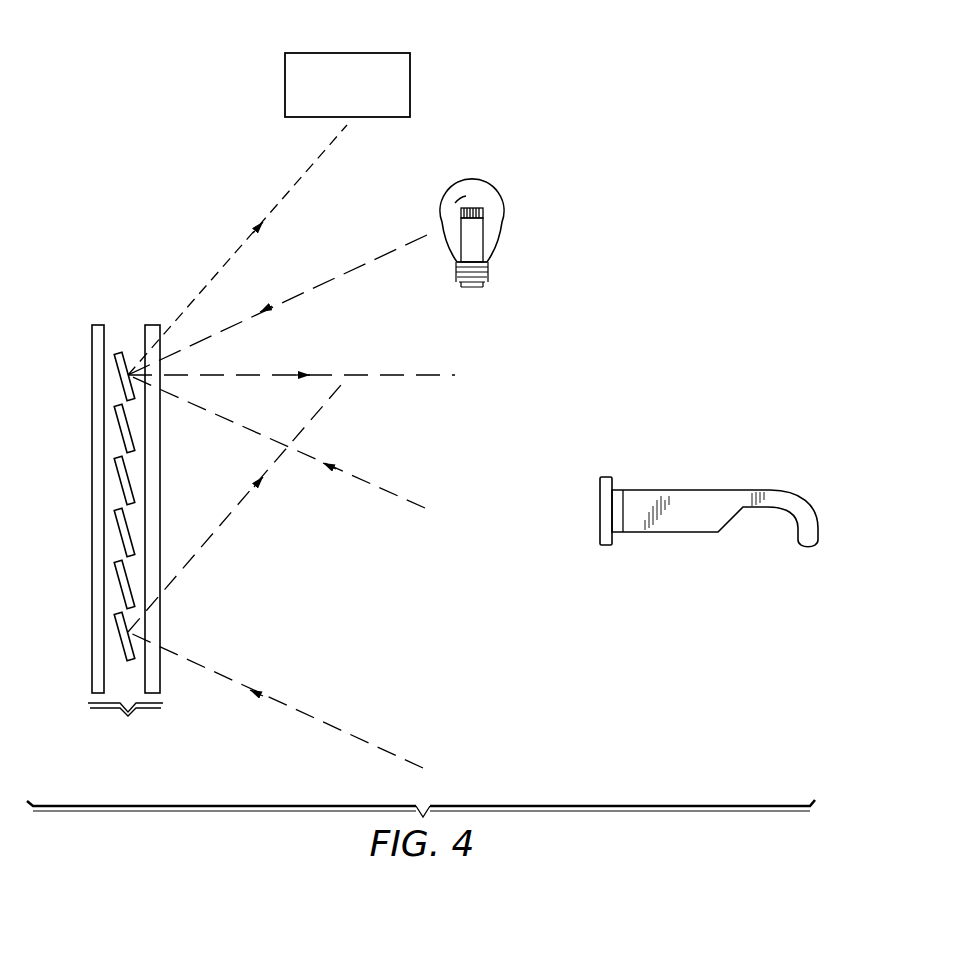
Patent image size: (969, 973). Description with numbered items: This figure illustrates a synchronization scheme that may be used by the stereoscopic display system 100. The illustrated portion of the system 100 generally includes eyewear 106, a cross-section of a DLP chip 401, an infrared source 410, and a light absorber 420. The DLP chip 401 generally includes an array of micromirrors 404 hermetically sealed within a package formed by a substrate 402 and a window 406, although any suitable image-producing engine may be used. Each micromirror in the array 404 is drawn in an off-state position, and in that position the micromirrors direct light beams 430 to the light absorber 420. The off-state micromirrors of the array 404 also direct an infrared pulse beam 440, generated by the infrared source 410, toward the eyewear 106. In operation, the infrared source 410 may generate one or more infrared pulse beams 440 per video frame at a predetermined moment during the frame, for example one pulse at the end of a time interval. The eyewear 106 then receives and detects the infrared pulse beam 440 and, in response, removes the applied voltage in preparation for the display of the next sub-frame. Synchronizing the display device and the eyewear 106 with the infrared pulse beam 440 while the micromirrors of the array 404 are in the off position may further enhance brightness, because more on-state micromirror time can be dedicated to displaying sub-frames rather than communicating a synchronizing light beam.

The stereoscopic display system 100 is at (664, 88).
The eyewear 106 is at (697, 490).
The DLP chip 401 is at (125, 724).
The substrate 402 is at (92, 493).
The array of micromirrors 404 is at (122, 322).
The window 406 is at (161, 471).
The infrared source 410 is at (490, 186).
The light absorber 420 is at (348, 52).
The light beams 430 is at (378, 488).
The infrared pulse beam 440 is at (310, 285).